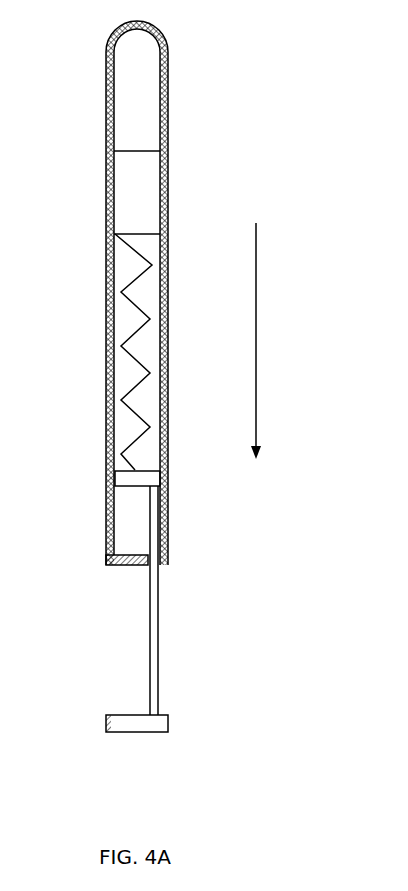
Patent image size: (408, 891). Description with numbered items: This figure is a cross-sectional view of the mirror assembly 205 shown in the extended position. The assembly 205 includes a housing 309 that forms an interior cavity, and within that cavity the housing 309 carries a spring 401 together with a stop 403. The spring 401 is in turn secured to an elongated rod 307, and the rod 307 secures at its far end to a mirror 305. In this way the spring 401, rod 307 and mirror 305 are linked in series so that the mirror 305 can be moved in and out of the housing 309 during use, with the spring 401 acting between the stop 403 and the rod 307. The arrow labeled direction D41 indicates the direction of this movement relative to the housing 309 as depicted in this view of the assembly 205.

The stop 403 is at (106, 190).
The spring 401 is at (137, 330).
The housing 309 is at (168, 505).
The elongated rod 307 is at (158, 626).
The mirror 305 is at (168, 724).
The assembly 205 is at (244, 174).
The direction D41 is at (256, 333).